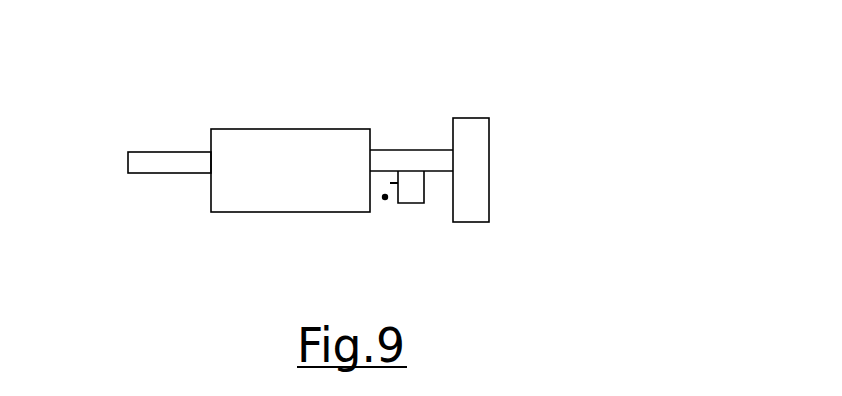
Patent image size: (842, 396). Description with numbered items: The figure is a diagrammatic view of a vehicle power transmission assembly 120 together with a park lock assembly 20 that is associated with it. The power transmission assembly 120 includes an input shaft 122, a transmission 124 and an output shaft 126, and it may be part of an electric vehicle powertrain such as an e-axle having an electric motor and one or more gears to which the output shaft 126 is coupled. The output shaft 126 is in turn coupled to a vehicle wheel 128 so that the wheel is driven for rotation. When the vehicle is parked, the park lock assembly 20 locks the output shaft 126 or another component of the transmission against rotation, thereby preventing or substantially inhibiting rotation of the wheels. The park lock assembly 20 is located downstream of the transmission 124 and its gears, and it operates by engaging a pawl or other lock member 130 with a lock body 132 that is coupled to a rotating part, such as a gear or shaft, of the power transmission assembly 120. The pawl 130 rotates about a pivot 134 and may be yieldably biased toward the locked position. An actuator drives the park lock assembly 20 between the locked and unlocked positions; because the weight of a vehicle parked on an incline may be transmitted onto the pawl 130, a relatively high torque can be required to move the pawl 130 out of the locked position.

The park lock assembly 20 is at (397, 212).
The vehicle power transmission assembly 120 is at (533, 169).
The input shaft 122 is at (162, 166).
The transmission 124 is at (245, 147).
The output shaft 126 is at (398, 160).
The vehicle wheel 128 is at (479, 133).
The pawl 130 is at (390, 183).
The lock body 132 is at (413, 195).
The pivot 134 is at (385, 197).